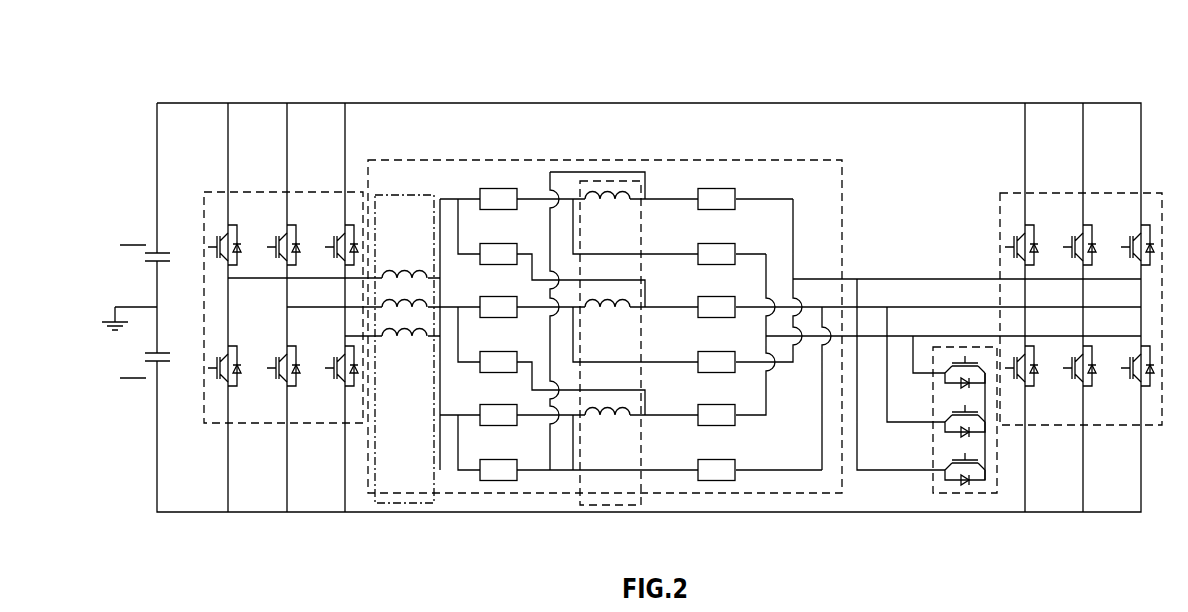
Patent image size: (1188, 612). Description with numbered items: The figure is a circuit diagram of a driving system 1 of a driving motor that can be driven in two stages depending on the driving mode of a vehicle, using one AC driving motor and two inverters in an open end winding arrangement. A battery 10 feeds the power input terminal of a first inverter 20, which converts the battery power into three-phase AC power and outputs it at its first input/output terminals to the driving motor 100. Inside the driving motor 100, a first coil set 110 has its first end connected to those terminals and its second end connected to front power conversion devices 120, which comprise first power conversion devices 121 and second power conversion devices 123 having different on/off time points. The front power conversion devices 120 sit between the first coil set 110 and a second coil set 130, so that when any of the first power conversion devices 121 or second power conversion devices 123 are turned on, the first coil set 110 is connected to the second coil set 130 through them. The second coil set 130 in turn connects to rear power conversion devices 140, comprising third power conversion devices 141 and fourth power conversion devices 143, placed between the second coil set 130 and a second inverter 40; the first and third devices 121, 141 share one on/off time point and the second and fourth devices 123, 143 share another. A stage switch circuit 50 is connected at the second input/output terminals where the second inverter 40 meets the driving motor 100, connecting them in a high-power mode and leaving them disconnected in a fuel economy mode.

The driving system of a driving motor 1 is at (1120, 32).
The battery 10 is at (133, 197).
The first inverter 20 is at (255, 192).
The second inverter 40 is at (1060, 192).
The stage switch circuit 50 is at (963, 493).
The driving motor 100 is at (793, 160).
The first coil set 110 is at (403, 503).
The front power conversion devices 120 is at (545, 309).
The first power conversion devices 121 is at (485, 187).
The second power conversion devices 123 is at (487, 243).
The second coil set 130 is at (608, 505).
The rear power conversion devices 140 is at (909, 309).
The third power conversion devices 141 is at (733, 187).
The fourth power conversion devices 143 is at (767, 387).